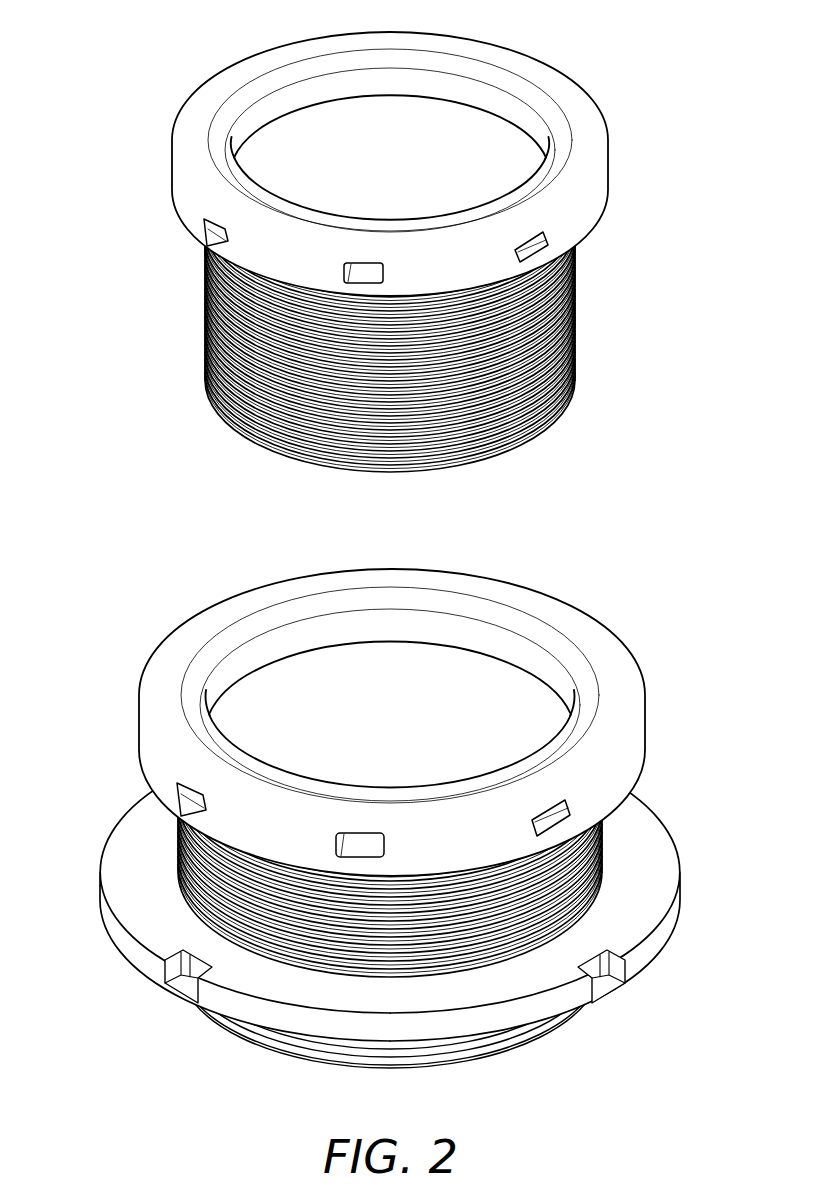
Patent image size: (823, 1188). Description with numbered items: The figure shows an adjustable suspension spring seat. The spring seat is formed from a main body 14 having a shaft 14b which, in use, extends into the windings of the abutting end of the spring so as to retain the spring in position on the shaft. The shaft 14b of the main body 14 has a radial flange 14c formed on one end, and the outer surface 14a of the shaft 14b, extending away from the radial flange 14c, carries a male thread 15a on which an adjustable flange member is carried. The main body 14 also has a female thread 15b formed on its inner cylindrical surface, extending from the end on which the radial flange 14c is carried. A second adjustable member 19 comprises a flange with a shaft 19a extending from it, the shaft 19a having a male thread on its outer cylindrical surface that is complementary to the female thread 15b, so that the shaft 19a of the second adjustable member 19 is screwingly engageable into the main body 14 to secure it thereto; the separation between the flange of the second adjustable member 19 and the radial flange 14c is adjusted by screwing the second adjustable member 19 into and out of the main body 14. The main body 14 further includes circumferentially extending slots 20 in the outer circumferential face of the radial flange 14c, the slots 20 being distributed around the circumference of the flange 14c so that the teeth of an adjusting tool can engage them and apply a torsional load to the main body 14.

The main body 14 is at (392, 702).
The outer surface 14a is at (177, 845).
The shaft 14b is at (603, 845).
The radial flange 14c is at (285, 792).
The male thread 15a is at (477, 937).
The female thread 15b is at (458, 648).
The second adjustable member 19 is at (376, 559).
The shaft 19a is at (376, 338).
The circumferentially extending slots 20 is at (565, 337).